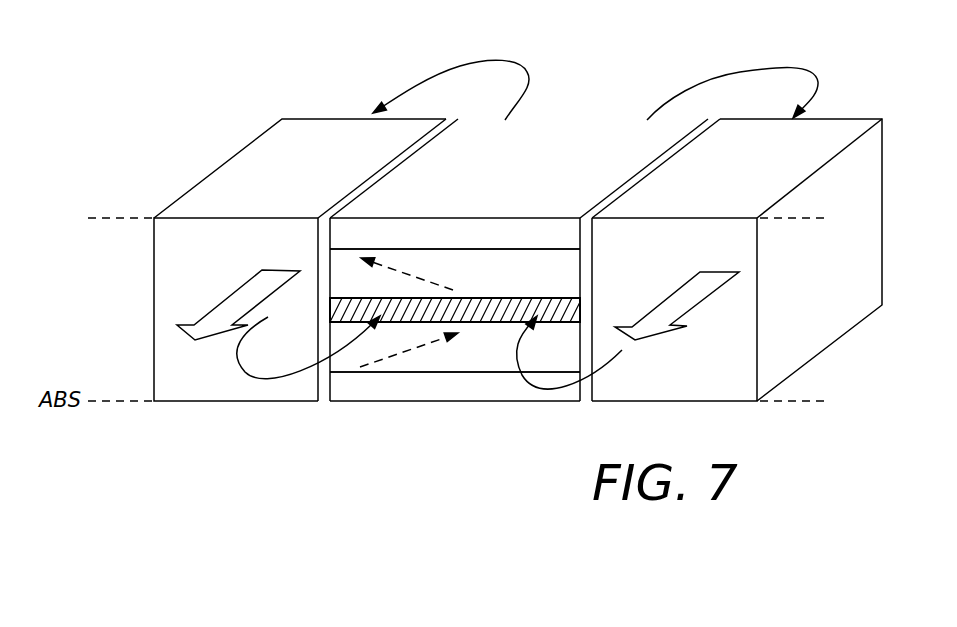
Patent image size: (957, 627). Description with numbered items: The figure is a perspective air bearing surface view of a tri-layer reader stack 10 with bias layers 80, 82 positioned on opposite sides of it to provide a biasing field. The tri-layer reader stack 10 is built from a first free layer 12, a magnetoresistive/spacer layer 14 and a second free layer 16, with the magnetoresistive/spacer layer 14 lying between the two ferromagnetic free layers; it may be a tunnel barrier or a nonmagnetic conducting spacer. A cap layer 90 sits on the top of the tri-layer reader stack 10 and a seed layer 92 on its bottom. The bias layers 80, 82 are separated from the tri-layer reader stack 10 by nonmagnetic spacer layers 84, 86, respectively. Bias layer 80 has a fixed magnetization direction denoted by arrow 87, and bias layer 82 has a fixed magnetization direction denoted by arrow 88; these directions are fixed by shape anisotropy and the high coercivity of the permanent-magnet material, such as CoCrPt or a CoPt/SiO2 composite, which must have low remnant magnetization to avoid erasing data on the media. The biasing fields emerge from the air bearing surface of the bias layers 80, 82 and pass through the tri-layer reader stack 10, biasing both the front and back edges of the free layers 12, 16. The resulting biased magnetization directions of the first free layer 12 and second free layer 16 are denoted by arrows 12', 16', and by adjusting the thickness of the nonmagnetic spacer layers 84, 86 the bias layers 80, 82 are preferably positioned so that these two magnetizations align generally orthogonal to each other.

The tri-layer reader stack 10 is at (464, 273).
The first free layer 12 is at (455, 273).
The magnetoresistive/spacer layer 14 is at (446, 320).
The second free layer 16 is at (455, 347).
The arrow denoting biased magnetization direction of first free layer 12' is at (428, 274).
The arrow denoting biased magnetization direction of second free layer 16' is at (430, 350).
The bias layer 80 is at (320, 175).
The bias layer 82 is at (755, 181).
The nonmagnetic spacer layer 84 is at (323, 394).
The nonmagnetic spacer layer 86 is at (585, 393).
The arrow denoting fixed magnetization direction of bias layer 80 87 is at (233, 305).
The arrow denoting fixed magnetization direction of bias layer 82 88 is at (675, 307).
The cap layer 90 is at (440, 247).
The seed layer 92 is at (442, 399).